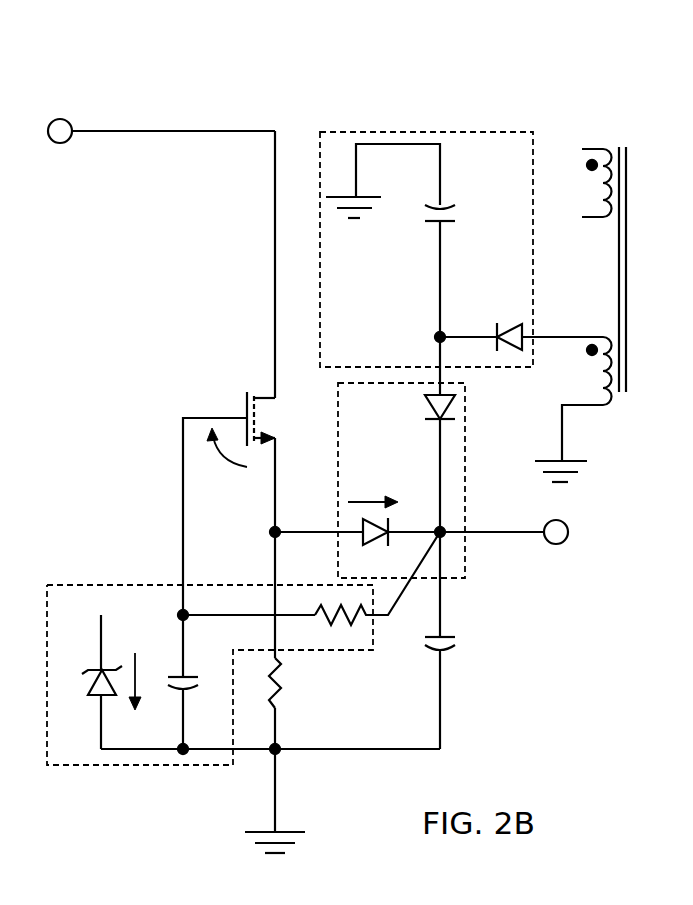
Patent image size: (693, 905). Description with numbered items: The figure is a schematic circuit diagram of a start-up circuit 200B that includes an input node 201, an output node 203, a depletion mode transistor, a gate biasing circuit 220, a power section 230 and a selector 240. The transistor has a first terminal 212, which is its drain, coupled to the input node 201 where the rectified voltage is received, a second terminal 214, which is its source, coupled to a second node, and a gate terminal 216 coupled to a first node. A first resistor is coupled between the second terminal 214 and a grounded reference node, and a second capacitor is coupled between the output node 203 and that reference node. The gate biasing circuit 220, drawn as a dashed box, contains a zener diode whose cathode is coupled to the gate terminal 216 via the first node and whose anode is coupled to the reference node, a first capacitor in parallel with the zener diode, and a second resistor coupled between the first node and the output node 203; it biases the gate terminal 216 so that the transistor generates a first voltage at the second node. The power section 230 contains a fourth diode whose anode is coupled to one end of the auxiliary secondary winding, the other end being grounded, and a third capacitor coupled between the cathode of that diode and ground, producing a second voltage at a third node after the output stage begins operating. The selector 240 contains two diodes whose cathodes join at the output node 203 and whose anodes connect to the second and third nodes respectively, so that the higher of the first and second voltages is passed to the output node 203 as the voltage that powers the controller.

The start-up circuit 200B is at (619, 90).
The input node 201 is at (60, 144).
The output node 203 is at (560, 545).
The first terminal 212 is at (275, 344).
The second terminal 214 is at (277, 457).
The gate terminal 216 is at (192, 418).
The gate biasing circuit 220 is at (102, 768).
The power section 230 is at (444, 128).
The selector 240 is at (467, 568).